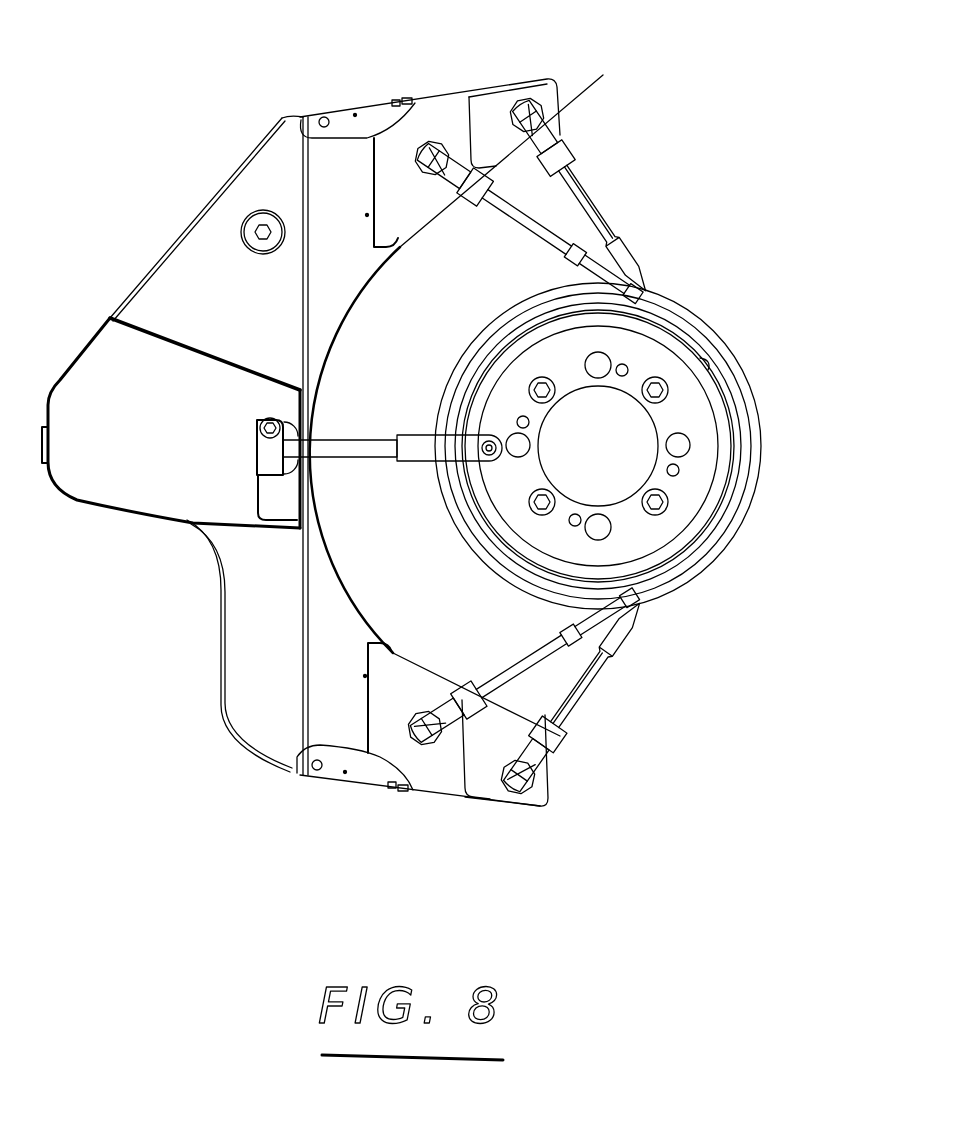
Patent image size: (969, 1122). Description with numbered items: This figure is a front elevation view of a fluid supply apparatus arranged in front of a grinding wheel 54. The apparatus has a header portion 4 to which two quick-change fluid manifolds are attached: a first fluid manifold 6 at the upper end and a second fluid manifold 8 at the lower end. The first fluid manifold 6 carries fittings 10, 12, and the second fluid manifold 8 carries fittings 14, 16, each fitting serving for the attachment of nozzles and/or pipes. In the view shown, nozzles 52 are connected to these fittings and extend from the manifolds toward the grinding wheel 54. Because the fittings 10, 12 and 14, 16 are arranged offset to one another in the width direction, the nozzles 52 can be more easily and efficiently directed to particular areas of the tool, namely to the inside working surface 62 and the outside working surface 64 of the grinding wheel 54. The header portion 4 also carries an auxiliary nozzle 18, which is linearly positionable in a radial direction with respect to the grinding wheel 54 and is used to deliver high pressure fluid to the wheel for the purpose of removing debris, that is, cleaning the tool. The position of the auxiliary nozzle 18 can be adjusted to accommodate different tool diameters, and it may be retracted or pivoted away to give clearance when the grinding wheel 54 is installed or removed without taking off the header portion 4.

The header portion 4 is at (202, 263).
The first fluid manifold 6 is at (487, 102).
The second fluid manifold 8 is at (488, 783).
The fitting 10 is at (538, 118).
The fitting 12 is at (447, 143).
The fitting 14 is at (530, 770).
The fitting 16 is at (443, 725).
The auxiliary nozzle 18 is at (423, 442).
The nozzles 52 is at (597, 218).
The grinding wheel 54 is at (752, 422).
The inside working surface 62 is at (707, 365).
The outside working surface 64 is at (734, 375).